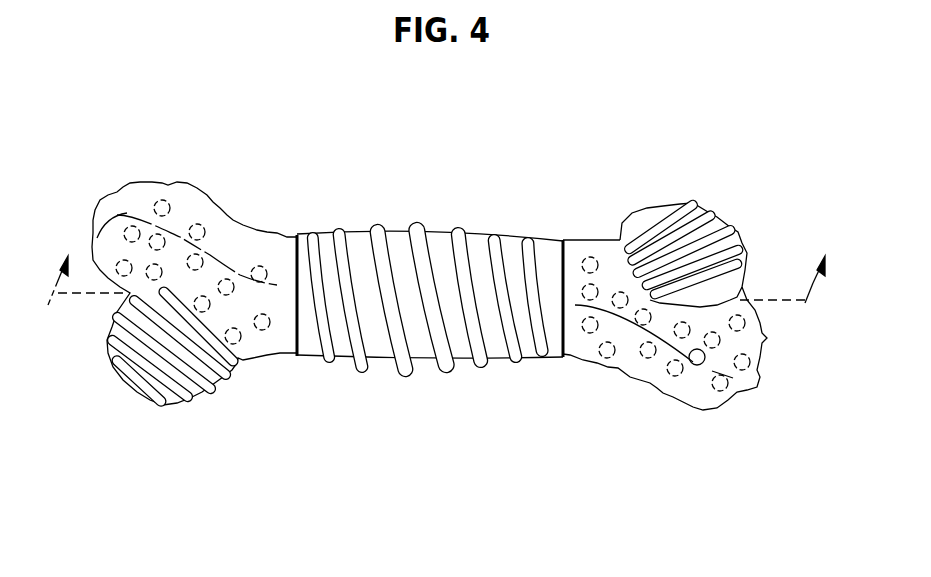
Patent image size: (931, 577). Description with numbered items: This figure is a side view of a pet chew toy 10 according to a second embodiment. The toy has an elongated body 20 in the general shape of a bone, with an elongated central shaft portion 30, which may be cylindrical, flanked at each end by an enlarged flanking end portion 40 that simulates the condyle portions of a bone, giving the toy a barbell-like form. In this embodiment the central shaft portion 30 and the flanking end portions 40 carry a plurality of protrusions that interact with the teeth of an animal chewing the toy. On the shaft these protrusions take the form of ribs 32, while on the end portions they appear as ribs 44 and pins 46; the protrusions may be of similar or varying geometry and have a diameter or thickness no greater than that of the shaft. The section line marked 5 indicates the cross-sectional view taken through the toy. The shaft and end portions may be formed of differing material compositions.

The pet chew toy 10 is at (301, 155).
The elongated body 20 is at (563, 357).
The central shaft portion 30 is at (370, 325).
The ribs 32 is at (450, 368).
The flanking end portion 40 is at (688, 360).
The ribs 44 is at (697, 203).
The pins 46 is at (767, 337).
The section line 5- 5 is at (439, 259).